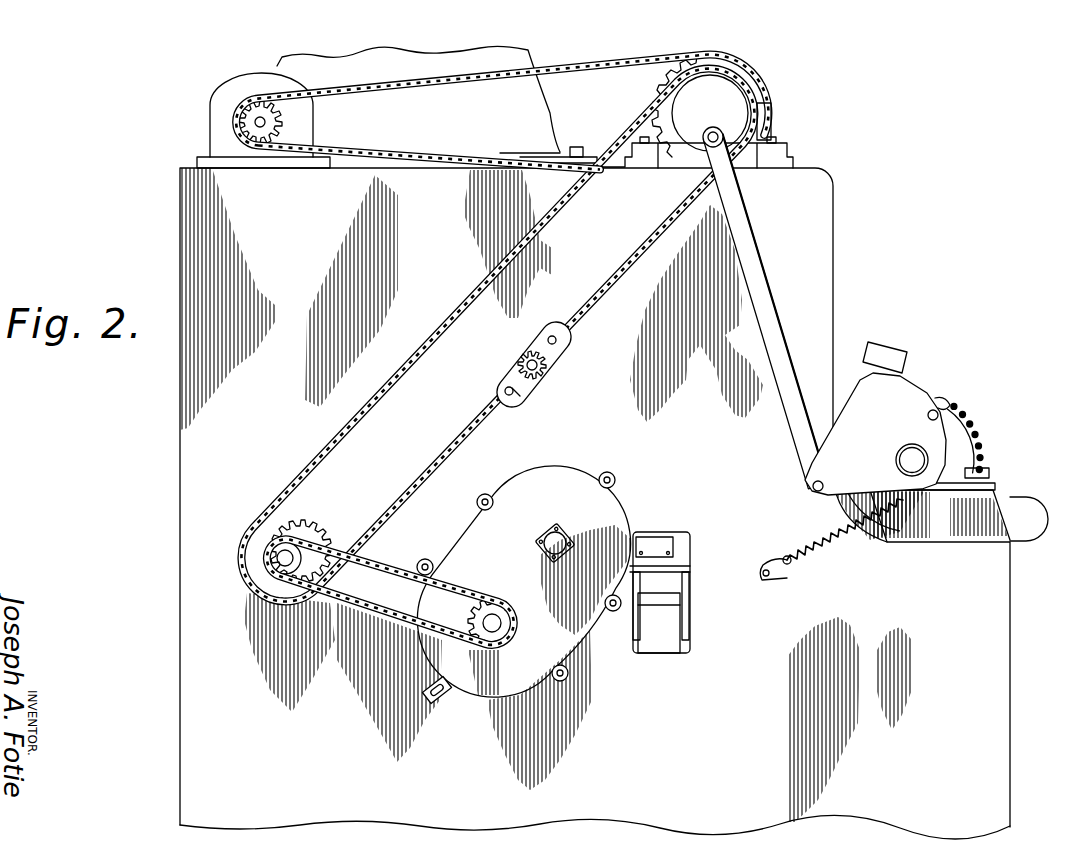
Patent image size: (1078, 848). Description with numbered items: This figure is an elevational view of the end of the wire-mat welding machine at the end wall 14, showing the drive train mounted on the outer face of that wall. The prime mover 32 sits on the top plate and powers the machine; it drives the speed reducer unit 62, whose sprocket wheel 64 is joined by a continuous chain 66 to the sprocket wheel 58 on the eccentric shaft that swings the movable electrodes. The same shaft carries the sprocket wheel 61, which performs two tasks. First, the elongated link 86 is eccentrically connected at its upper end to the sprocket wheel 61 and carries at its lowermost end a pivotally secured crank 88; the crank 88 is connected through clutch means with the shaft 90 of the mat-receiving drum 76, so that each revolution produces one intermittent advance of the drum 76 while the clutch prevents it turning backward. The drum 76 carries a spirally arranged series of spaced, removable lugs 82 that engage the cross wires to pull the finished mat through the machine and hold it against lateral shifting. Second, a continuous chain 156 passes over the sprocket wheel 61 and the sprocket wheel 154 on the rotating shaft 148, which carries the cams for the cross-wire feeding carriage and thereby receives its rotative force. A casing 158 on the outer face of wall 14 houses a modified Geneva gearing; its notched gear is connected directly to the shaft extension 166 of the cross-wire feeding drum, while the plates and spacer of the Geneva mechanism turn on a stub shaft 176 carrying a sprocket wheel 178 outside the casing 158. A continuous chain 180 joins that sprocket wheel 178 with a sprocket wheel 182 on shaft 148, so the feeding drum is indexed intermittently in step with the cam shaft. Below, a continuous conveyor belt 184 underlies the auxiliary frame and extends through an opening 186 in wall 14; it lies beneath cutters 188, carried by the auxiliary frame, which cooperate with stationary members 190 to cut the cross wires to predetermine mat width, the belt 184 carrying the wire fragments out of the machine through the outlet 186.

The end wall 14 is at (614, 488).
The prime mover 32 is at (522, 110).
The sprocket wheel 58 is at (728, 63).
The sprocket wheel 61 is at (728, 122).
The speed reducer unit 62 is at (218, 128).
The sprocket wheel 64 is at (270, 142).
The continuous chain 66 is at (450, 84).
The mat-receiving drum 76 is at (960, 443).
The removable lugs 82 is at (944, 402).
The elongated link 86 is at (767, 312).
The crank 88 is at (903, 388).
The shaft 90 is at (910, 459).
The rotating shaft 148 is at (285, 558).
The sprocket wheel 154 is at (300, 528).
The continuous chain 156 is at (401, 378).
The casing 158 is at (500, 690).
The shaft extension 166 is at (556, 541).
The stub shaft 176 is at (494, 622).
The sprocket wheel 178 is at (490, 638).
The continuous chain 180 is at (366, 606).
The sprocket wheel 182 is at (283, 574).
The continuous conveyor belt 184 is at (652, 590).
The opening 186 is at (672, 585).
The cutters 188 is at (655, 548).
The stationary members 190 is at (672, 580).